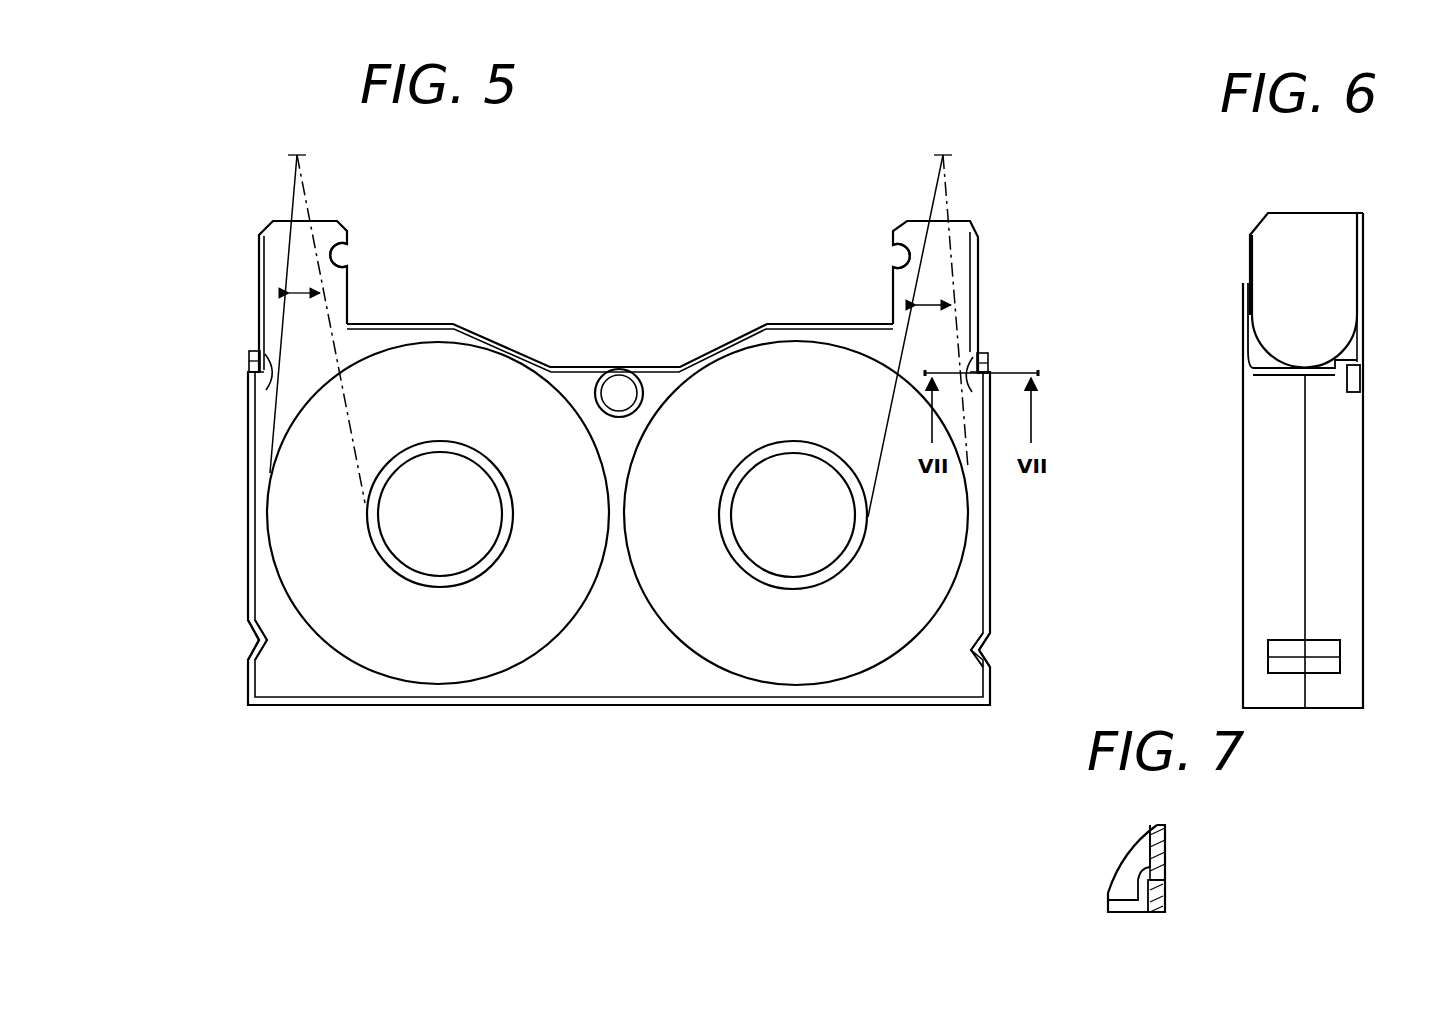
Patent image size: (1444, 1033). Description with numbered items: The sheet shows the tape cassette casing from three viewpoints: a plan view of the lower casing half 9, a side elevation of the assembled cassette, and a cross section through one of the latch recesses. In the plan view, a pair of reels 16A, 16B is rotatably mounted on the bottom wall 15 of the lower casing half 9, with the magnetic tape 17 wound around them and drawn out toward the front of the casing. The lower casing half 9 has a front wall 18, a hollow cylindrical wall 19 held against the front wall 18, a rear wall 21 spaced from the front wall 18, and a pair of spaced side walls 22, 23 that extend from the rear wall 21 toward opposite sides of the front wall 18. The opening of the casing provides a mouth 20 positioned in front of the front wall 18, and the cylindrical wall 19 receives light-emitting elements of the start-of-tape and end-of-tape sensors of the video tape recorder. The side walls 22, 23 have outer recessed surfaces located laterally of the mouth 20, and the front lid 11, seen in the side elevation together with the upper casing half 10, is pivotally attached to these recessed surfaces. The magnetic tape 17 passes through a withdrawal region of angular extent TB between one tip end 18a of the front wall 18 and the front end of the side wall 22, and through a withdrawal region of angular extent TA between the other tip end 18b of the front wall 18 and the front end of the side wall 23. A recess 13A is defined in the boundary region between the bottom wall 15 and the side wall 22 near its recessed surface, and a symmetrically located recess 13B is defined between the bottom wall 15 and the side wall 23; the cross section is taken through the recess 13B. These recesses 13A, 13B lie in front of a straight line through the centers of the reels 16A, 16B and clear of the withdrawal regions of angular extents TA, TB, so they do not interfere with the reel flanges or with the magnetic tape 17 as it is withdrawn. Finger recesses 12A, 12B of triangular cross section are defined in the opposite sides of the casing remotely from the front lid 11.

In FIG. 5, the lower casing half 9 is at (232, 466).
In FIG. 6, the lower casing half 9 is at (1352, 527).
In FIG. 6, the upper casing half 10 is at (1262, 497).
In FIG. 6, the front lid 11 is at (1315, 230).
In FIG. 5, the finger recess 12A is at (247, 640).
In FIG. 5, the finger recess 12B is at (993, 648).
In FIG. 5, the recess 13A is at (240, 373).
In FIG. 5, the recess 13B is at (990, 353).
In FIG. 6, the recess 13B is at (1362, 378).
In FIG. 7, the recess 13B is at (1160, 897).
In FIG. 5, the bottom wall 15 is at (263, 585).
In FIG. 7, the bottom wall 15 is at (1120, 906).
In FIG. 5, the reel 16A is at (437, 587).
In FIG. 5, the reel 16B is at (800, 589).
In FIG. 5, the magnetic tape 17 is at (293, 159).
In FIG. 5, the front wall 18 is at (531, 343).
In FIG. 5, the tip end of front wall 18a is at (349, 272).
In FIG. 5, the tip end of front wall 18b is at (893, 267).
In FIG. 5, the hollow cylindrical wall 19 is at (645, 367).
In FIG. 5, the mouth 20 is at (516, 288).
In FIG. 5, the rear wall 21 is at (637, 700).
In FIG. 5, the side wall 22 is at (258, 276).
In FIG. 5, the side wall 23 is at (980, 264).
In FIG. 7, the side wall 23 is at (1167, 843).
In FIG. 5, the angular extent of withdrawal region TA is at (932, 310).
In FIG. 5, the angular extent of withdrawal region TB is at (302, 298).